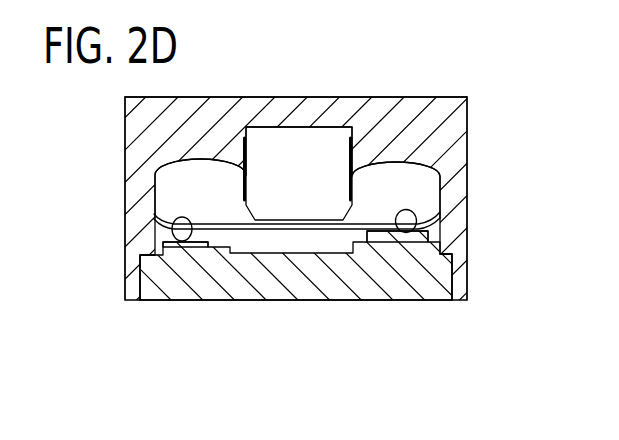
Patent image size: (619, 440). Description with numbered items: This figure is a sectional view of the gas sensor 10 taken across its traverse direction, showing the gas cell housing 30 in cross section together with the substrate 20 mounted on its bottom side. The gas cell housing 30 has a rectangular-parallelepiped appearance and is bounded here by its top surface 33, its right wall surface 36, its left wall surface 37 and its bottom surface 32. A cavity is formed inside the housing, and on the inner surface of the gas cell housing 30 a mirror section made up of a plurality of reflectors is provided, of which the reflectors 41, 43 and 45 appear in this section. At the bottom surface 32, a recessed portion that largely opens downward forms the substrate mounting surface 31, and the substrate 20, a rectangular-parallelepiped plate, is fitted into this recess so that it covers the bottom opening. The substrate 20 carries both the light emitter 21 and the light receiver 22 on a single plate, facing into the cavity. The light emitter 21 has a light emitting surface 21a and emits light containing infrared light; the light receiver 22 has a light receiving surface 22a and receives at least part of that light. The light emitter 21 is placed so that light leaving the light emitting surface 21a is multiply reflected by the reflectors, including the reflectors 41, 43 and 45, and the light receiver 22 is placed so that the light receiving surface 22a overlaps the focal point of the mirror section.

The gas sensor 10 is at (498, 132).
The substrate 20 is at (218, 301).
The light emitter 21 is at (236, 250).
The light emitting surface 21a is at (192, 163).
The light receiver 22 is at (352, 250).
The light receiving surface 22a is at (398, 163).
The gas cell housing 30 is at (471, 233).
The substrate mounting surface 31 is at (470, 273).
The bottom surface 32 is at (137, 302).
The top surface 33 is at (433, 95).
The right wall surface 36 is at (470, 172).
The left wall surface 37 is at (128, 214).
The reflector 41 is at (215, 183).
The reflector 43 is at (304, 165).
The reflector 45 is at (383, 188).